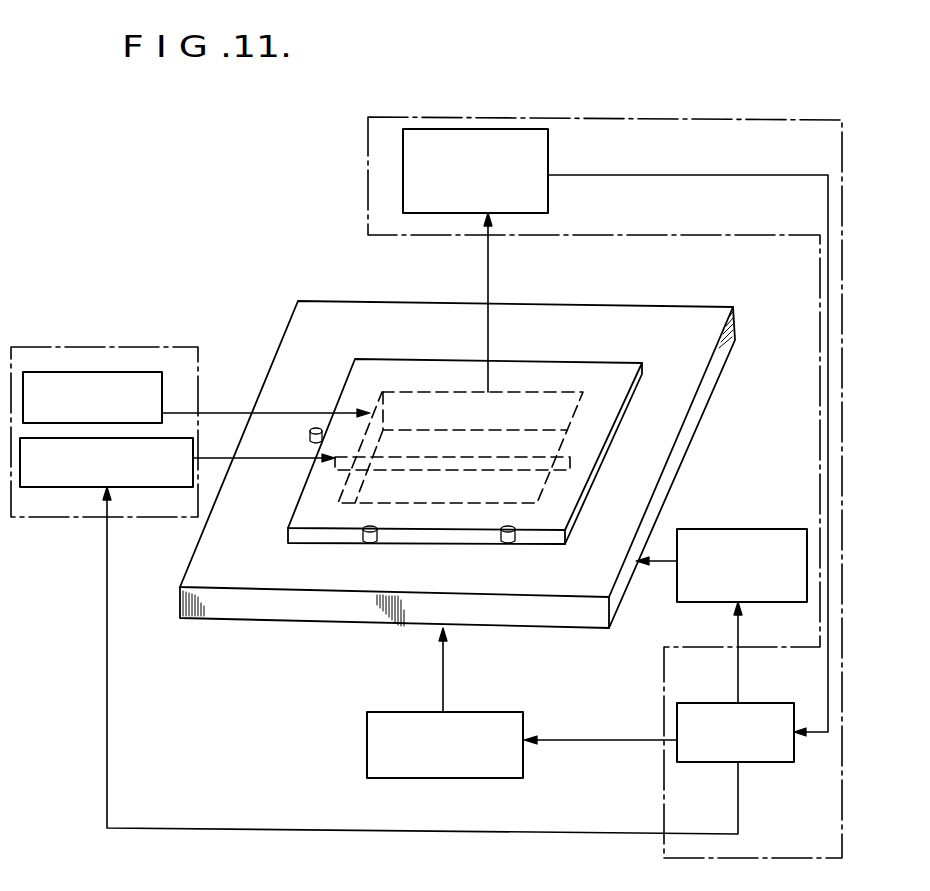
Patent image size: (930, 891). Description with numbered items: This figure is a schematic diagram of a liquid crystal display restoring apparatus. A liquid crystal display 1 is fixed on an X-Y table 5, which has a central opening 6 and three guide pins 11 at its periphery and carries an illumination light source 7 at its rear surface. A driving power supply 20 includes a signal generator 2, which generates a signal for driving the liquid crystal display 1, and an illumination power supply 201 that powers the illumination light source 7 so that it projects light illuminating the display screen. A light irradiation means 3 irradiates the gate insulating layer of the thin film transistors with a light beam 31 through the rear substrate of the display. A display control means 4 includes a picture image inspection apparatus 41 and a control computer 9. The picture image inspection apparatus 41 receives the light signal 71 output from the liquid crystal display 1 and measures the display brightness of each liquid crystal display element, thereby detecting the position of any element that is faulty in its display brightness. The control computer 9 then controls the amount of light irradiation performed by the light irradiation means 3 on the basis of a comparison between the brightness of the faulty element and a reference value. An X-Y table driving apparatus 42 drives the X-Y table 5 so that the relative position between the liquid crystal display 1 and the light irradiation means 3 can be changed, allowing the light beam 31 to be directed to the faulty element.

The liquid crystal display 1 is at (630, 363).
The guide pins 11 is at (314, 425).
The signal generator 2 is at (162, 392).
The driving power supply 20 is at (95, 347).
The illumination power supply 201 is at (70, 488).
The light irradiation means 3 is at (493, 712).
The light beam 31 is at (440, 660).
The display control means 4 is at (586, 115).
The picture image inspection apparatus 41 is at (552, 160).
The X-Y table driving apparatus 42 is at (752, 528).
The X-Y table 5 is at (693, 438).
The central opening 6 is at (532, 392).
The illumination light source 7 is at (570, 467).
The light signal 71 is at (490, 281).
The control computer 9 is at (718, 764).